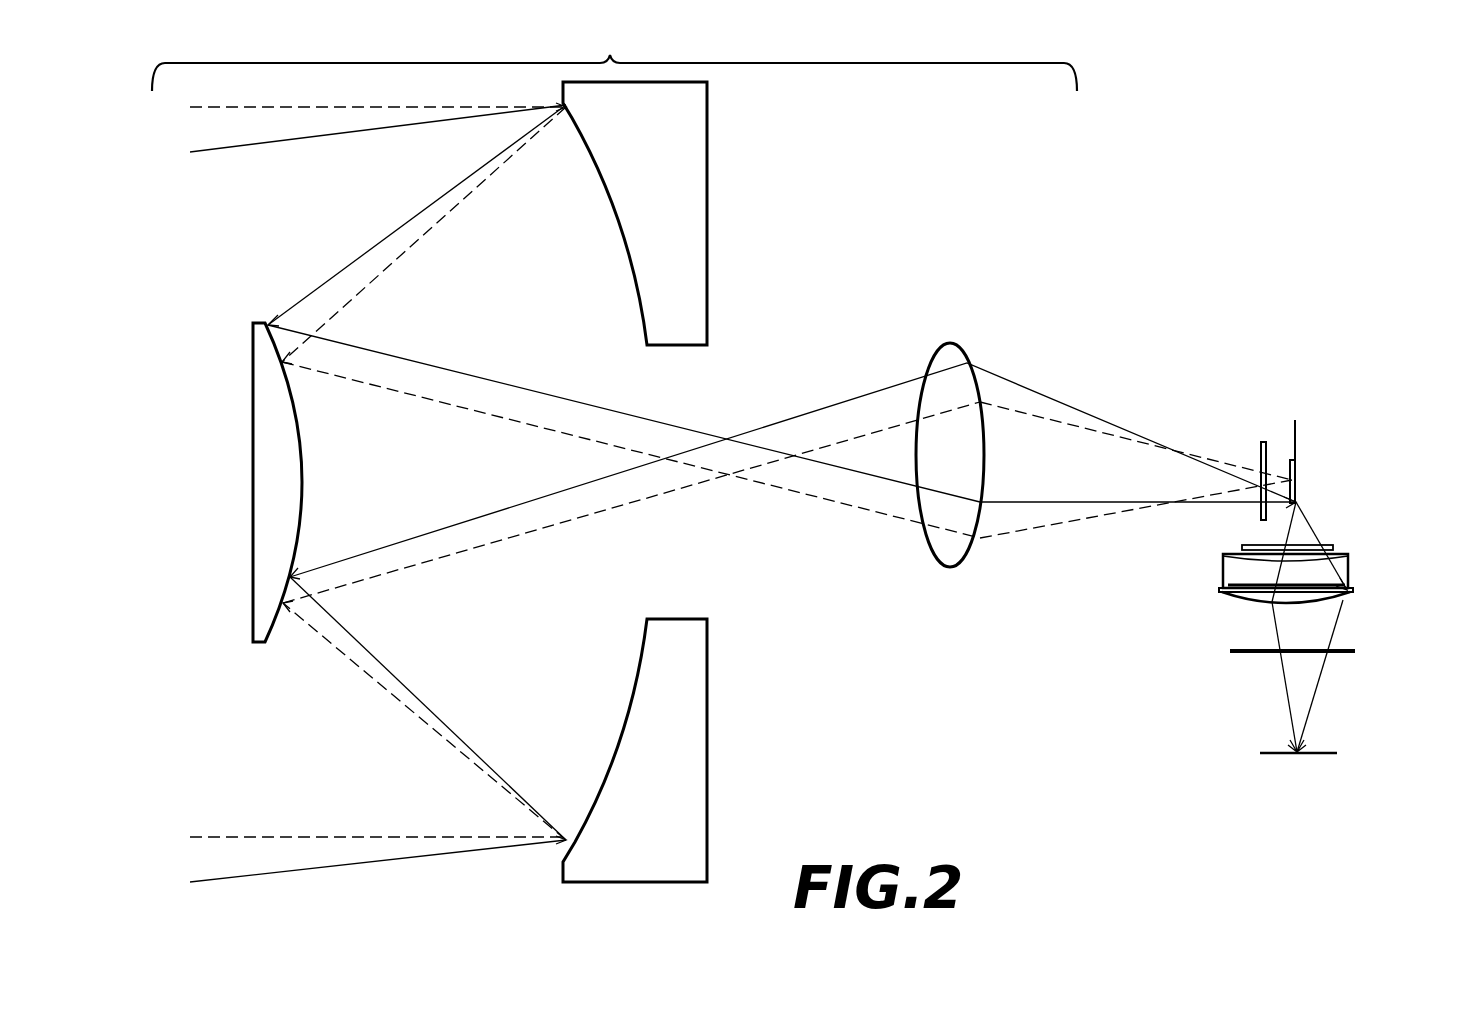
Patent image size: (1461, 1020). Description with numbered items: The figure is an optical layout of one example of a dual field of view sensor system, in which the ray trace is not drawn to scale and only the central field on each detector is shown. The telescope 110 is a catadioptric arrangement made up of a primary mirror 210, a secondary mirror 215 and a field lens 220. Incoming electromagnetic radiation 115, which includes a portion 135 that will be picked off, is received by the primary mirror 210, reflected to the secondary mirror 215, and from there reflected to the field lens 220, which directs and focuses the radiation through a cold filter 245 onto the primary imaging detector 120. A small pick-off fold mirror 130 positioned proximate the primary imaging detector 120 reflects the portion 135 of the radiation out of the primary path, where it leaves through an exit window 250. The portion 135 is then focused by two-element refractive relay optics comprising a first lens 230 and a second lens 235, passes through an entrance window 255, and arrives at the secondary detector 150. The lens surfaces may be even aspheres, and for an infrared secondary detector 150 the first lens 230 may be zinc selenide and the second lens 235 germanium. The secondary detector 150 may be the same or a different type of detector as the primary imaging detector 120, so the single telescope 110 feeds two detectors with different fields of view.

The telescope 110 is at (614, 55).
The incoming electromagnetic radiation 115 is at (215, 107).
The portion of the electromagnetic radiation 135 is at (252, 145).
The primary mirror 210 is at (627, 253).
The secondary mirror 215 is at (253, 486).
The field lens 220 is at (955, 343).
The cold filter 245 is at (1262, 442).
The primary imaging detector 120 is at (1297, 452).
The fold mirror 130 is at (1300, 508).
The exit window 250 is at (1333, 548).
The first lens 230 is at (1350, 567).
The second lens 235 is at (1355, 592).
The entrance window 255 is at (1355, 651).
The secondary detector 150 is at (1320, 755).